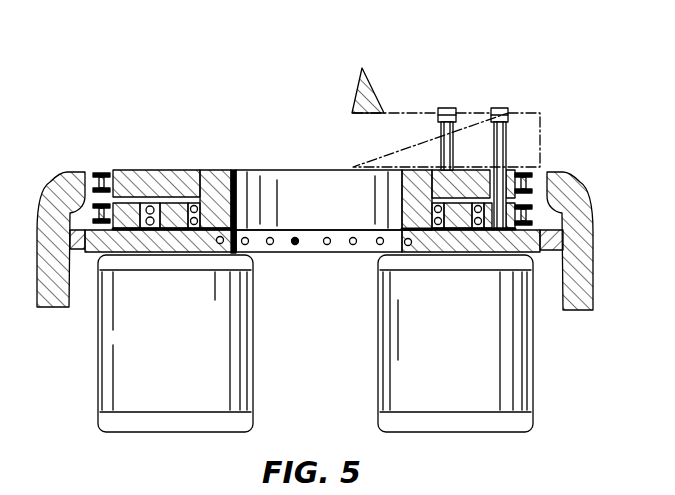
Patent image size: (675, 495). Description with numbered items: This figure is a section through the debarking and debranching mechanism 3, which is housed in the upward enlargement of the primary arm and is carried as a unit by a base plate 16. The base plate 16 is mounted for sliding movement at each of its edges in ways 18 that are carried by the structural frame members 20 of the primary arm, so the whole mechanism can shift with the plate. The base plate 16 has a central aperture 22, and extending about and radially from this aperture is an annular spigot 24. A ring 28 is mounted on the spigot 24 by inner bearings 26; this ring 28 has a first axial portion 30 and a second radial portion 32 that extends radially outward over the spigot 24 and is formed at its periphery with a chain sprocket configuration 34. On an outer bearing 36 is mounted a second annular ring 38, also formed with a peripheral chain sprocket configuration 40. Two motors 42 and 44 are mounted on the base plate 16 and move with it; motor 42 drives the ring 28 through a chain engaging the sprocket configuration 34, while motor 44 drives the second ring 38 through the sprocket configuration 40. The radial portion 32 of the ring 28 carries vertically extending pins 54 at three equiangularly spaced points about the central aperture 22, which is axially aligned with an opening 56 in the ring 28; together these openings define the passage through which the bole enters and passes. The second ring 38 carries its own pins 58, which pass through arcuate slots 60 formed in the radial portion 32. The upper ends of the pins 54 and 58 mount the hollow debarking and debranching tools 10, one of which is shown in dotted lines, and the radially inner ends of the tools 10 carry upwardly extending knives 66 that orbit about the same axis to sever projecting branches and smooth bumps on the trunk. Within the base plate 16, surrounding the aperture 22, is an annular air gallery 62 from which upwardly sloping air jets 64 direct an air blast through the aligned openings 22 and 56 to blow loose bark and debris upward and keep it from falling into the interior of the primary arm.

The debarking and debranching mechanism 3 is at (112, 86).
The debarking and debranching tools 10 is at (522, 110).
The base plate 16 is at (412, 253).
The ways 18 is at (70, 242).
The structural frame members 20 is at (42, 226).
The central aperture 22 is at (317, 253).
The annular spigot 24 is at (452, 205).
The inner bearings 26 is at (204, 203).
The ring 28 is at (240, 172).
The first axial portion 30 is at (218, 205).
The second radial portion 32 is at (134, 170).
The peripheral chain sprocket configuration 34 is at (96, 173).
The outer bearing 36 is at (172, 215).
The second annular ring 38 is at (151, 228).
The peripheral chain sprocket configuration 40 is at (92, 208).
The motor 42 is at (244, 392).
The motor 44 is at (386, 364).
The pins 54 is at (446, 108).
The opening 56 is at (400, 218).
The pins 58 is at (501, 107).
The arcuate slots 60 is at (468, 171).
The annular air gallery 62 is at (221, 244).
The air jets 64 is at (248, 244).
The knives 66 is at (354, 94).